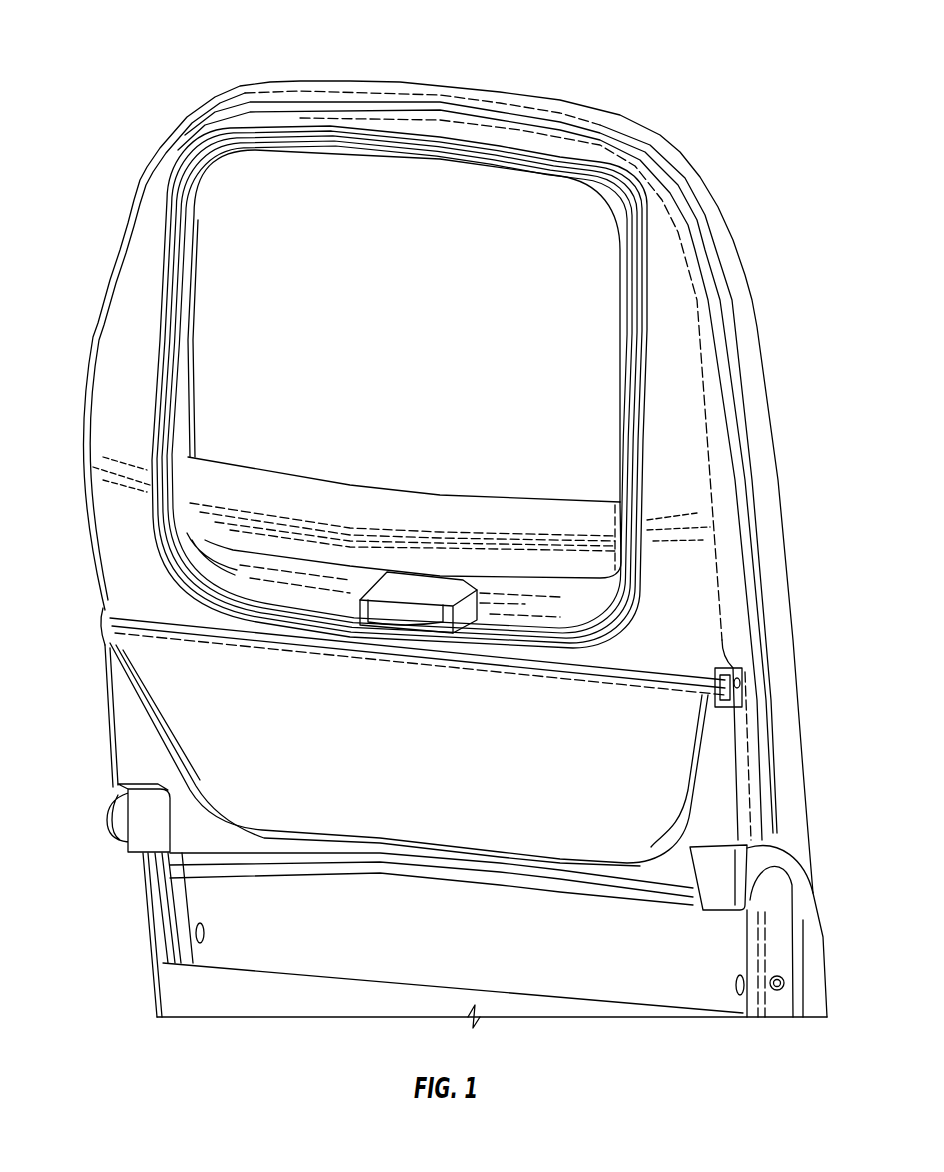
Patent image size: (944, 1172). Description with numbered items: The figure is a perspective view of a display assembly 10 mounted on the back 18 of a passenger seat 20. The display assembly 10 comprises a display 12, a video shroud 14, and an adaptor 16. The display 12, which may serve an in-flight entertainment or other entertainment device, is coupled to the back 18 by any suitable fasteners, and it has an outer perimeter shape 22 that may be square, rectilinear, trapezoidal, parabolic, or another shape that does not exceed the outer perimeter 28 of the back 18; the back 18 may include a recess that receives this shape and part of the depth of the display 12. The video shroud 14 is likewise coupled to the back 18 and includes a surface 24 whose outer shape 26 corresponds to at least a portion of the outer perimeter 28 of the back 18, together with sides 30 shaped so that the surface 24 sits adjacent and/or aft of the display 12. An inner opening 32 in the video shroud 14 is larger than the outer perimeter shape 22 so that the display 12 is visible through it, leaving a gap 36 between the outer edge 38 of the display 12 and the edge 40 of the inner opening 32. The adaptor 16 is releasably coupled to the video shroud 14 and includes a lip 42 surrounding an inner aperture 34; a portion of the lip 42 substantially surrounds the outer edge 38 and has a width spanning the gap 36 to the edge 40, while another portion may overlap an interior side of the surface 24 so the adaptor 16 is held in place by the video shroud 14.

The display assembly 10 is at (737, 93).
The display 12 is at (223, 180).
The video shroud 14 is at (107, 392).
The adaptor 16 is at (190, 567).
The back 18 is at (762, 405).
The passenger seat 20 is at (732, 228).
The outer perimeter shape 22 is at (180, 490).
The surface 24 is at (123, 327).
The outer shape 26 is at (555, 127).
The outer perimeter 28 is at (660, 137).
The sides 30 is at (730, 547).
The inner opening 32 is at (550, 648).
The inner aperture 34 is at (232, 548).
The gap 36 is at (553, 597).
The outer edge 38 is at (517, 577).
The edge 40 is at (510, 647).
The lip 42 is at (570, 607).